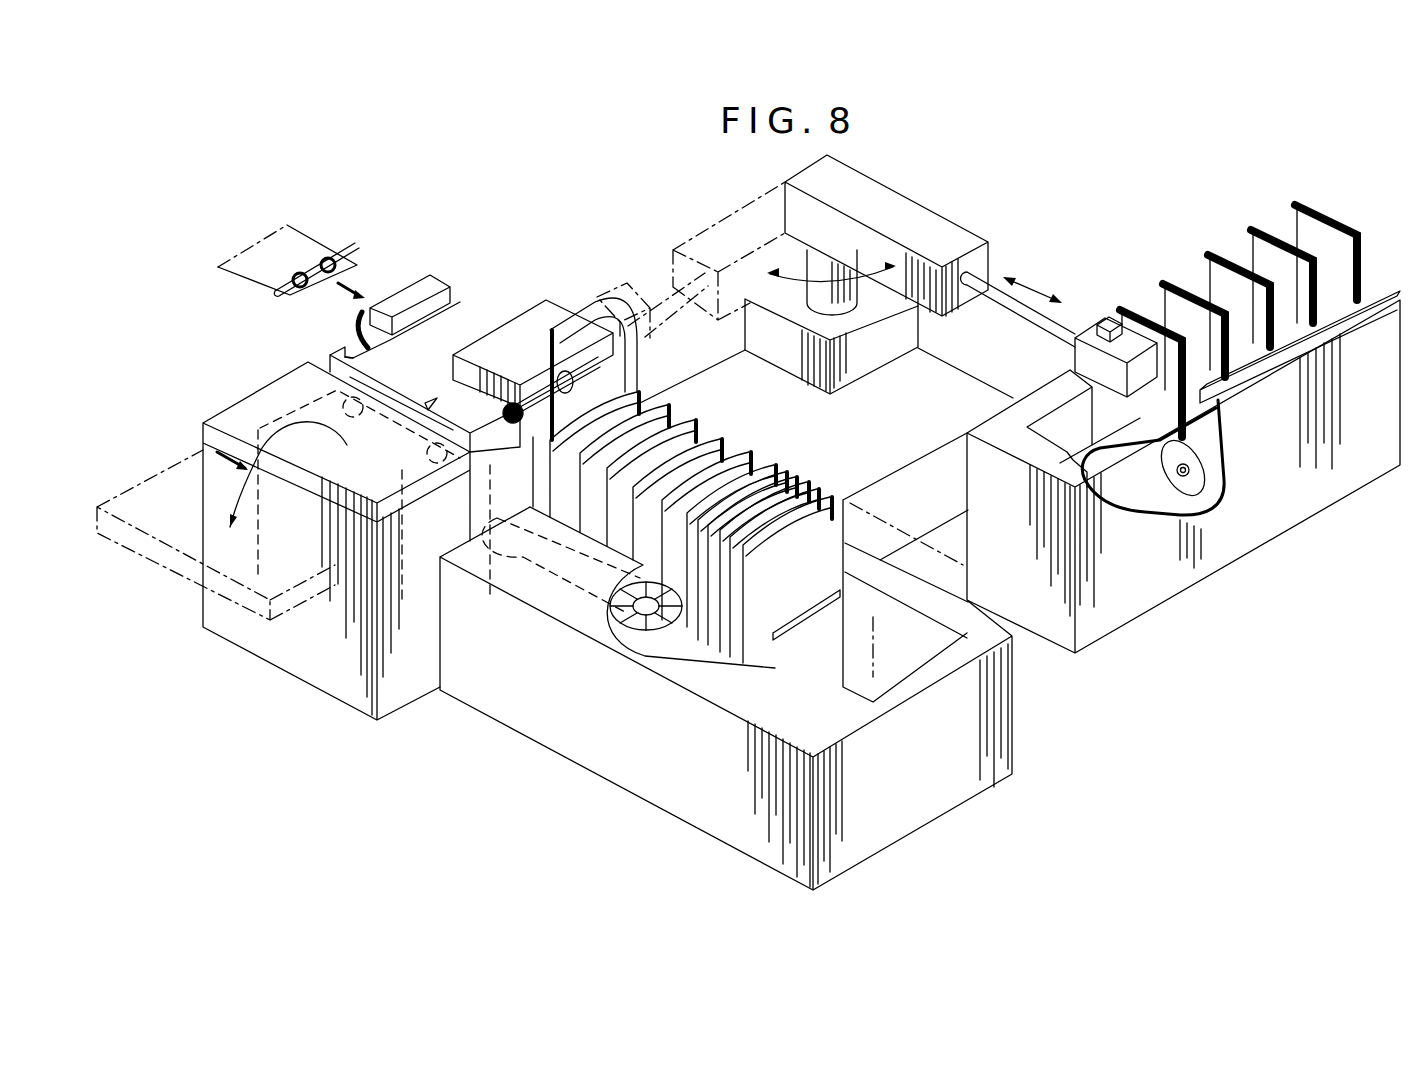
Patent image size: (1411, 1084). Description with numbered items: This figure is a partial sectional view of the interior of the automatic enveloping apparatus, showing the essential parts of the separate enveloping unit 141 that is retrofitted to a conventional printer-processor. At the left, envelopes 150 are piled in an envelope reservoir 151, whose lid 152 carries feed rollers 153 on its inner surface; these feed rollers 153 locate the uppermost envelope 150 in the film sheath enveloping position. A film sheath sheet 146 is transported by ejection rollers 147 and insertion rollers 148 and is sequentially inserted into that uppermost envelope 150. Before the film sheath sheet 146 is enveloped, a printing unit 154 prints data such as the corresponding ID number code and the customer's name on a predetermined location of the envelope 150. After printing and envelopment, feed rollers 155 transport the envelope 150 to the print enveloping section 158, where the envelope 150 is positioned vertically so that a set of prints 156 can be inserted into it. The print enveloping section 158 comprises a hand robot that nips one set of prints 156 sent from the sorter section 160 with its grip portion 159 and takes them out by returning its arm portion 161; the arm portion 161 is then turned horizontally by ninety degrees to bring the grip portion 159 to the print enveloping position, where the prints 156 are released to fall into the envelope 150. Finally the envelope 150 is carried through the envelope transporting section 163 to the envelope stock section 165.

The enveloping unit 141 is at (540, 743).
The film sheath sheet 146 is at (301, 245).
The ejection rollers 147 is at (323, 255).
The insertion rollers 148 is at (340, 322).
The envelope 150 is at (260, 428).
The envelope reservoir 151 is at (333, 618).
The lid 152 is at (247, 393).
The feed rollers 153 is at (303, 362).
The printing unit 154 is at (517, 323).
The feed rollers 155 is at (520, 400).
The prints 156 is at (603, 290).
The print enveloping section 158 is at (907, 183).
The grip portion 159 is at (1107, 333).
The sorter section 160 is at (1288, 530).
The arm portion 161 is at (1068, 330).
The envelope transporting section 163 is at (643, 628).
The envelope stock section 165 is at (820, 617).